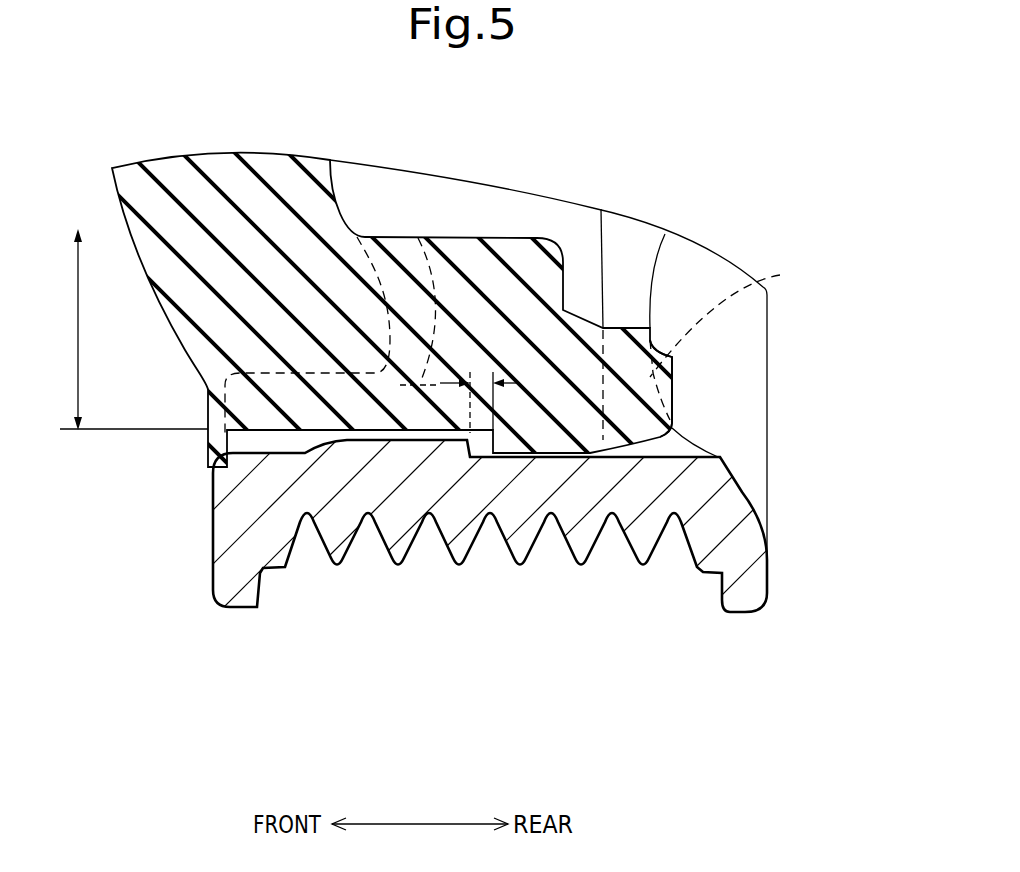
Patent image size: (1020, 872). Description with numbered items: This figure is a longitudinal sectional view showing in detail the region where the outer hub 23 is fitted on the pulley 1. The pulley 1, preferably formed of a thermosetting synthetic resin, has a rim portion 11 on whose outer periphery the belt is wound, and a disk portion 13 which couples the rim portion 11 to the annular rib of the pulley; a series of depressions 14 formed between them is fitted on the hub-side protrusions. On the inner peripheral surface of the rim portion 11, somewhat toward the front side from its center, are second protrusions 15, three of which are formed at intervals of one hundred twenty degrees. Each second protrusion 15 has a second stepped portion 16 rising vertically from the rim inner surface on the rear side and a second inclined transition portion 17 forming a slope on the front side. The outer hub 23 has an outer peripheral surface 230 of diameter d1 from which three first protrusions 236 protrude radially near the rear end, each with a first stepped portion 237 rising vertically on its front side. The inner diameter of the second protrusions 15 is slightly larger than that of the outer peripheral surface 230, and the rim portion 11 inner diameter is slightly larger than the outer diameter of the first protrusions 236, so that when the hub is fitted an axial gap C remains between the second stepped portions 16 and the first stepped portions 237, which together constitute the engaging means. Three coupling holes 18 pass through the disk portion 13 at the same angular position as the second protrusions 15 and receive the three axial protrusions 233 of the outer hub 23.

The pulley 1 is at (737, 545).
The rim portion 11 is at (637, 493).
The disk portion 13 is at (650, 287).
The depressions 14 is at (493, 224).
The second protrusions 15 is at (410, 442).
The second stepped portion 16 is at (467, 443).
The second inclined transition portion 17 is at (298, 454).
The coupling holes 18 is at (780, 275).
The outer hub 23 is at (260, 217).
The outer peripheral surface 230 is at (253, 432).
The axial protrusions 233 is at (640, 391).
The first protrusions 236 is at (548, 442).
The first stepped portion 237 is at (490, 445).